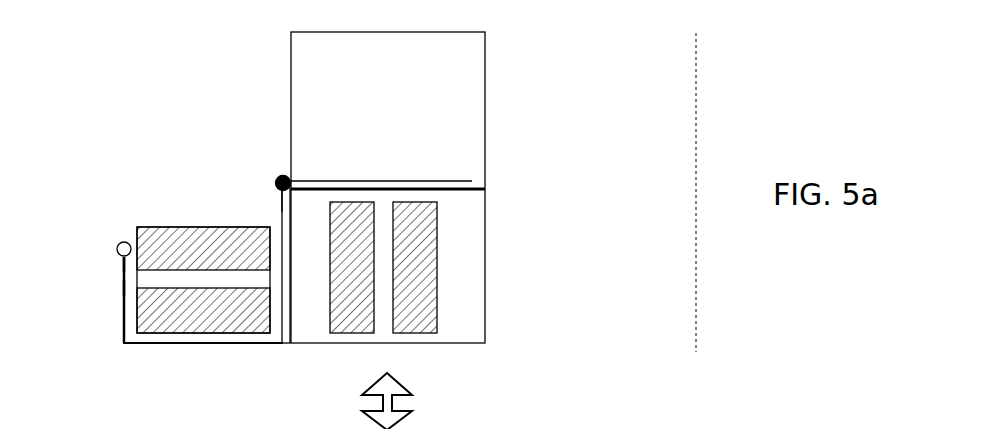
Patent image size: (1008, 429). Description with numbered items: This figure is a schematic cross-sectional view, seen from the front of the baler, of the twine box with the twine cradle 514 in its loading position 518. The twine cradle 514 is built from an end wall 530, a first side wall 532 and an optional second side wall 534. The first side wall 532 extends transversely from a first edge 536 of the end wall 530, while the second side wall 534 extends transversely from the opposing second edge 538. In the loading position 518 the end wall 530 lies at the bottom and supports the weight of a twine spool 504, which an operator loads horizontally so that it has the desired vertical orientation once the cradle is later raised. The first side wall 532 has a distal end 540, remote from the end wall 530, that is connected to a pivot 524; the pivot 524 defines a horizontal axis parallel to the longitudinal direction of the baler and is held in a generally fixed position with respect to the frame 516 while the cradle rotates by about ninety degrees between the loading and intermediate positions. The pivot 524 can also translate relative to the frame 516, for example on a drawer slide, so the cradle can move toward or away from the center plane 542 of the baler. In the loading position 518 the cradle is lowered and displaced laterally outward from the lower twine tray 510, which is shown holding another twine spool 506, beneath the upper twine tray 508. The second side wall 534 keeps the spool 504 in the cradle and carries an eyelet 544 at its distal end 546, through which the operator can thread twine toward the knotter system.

The twine spool 504 is at (167, 227).
The twine spool 506 is at (438, 267).
The upper twine tray 508 is at (502, 132).
The lower twine tray 510 is at (503, 280).
The twine cradle 514 is at (211, 346).
The frame 516 is at (486, 53).
The loading position 518 is at (121, 287).
The pivot 524 is at (278, 178).
The end wall 530 is at (155, 344).
The first side wall 532 is at (245, 227).
The second side wall 534 is at (121, 305).
The first edge 536 is at (287, 346).
The second edge 538 is at (122, 346).
The distal end 540 is at (278, 198).
The center plane 542 is at (697, 82).
The eyelet 544 is at (119, 243).
The distal end 546 is at (116, 265).